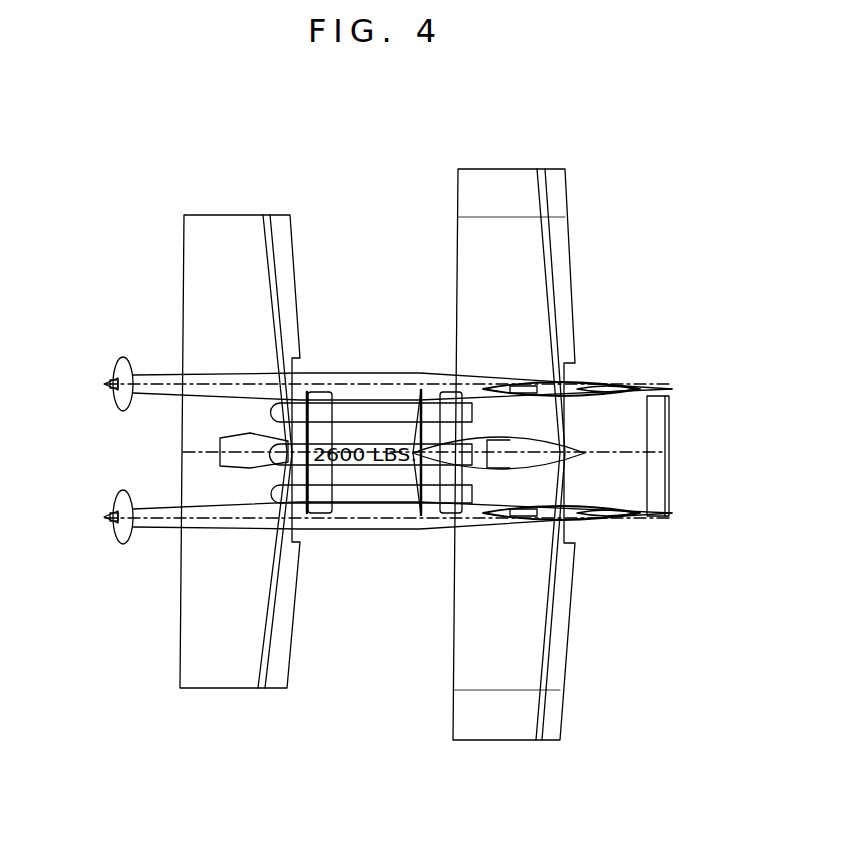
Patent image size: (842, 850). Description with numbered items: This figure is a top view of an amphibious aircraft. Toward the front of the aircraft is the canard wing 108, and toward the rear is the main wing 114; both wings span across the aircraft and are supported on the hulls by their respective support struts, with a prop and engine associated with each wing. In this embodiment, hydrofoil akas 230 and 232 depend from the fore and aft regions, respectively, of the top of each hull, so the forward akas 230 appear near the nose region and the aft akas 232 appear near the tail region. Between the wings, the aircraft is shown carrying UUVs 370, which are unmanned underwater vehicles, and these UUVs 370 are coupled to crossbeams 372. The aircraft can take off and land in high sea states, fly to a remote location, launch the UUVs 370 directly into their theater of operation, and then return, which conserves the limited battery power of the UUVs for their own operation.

The canard wing 108 is at (225, 215).
The main wing 114 is at (507, 165).
The hydrofoil aka 230 is at (117, 368).
The hydrofoil aka 232 is at (657, 432).
The UUV 370 is at (365, 508).
The crossbeam 372 is at (398, 405).